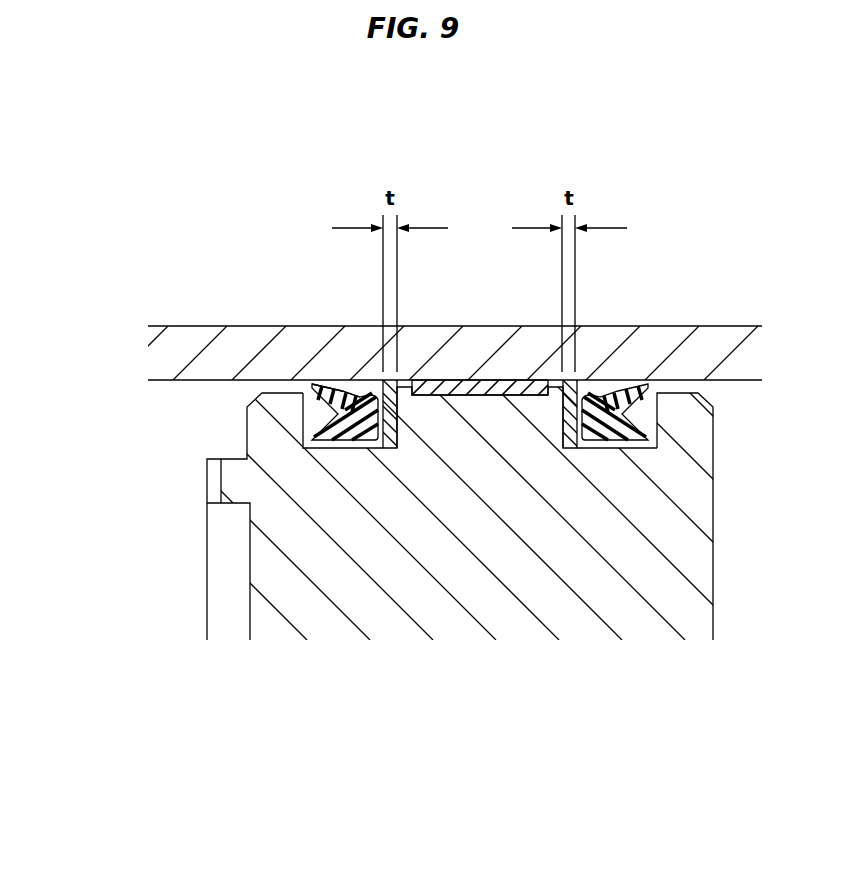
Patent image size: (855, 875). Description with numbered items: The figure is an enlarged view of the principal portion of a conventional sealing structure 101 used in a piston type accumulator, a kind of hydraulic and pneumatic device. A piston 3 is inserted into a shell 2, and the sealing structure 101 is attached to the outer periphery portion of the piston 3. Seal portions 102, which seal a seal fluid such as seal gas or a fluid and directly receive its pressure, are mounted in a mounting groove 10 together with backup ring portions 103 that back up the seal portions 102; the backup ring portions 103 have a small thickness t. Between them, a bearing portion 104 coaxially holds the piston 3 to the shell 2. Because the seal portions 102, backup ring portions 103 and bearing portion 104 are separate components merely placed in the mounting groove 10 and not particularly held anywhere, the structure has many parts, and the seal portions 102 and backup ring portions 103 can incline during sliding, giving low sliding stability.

The shell 2 is at (170, 357).
The piston 3 is at (475, 593).
The mounting groove 10 is at (368, 448).
The sealing structure 101 is at (311, 369).
The seal portion 102 is at (357, 392).
The backup ring portion 103 is at (390, 380).
The bearing portion 104 is at (477, 385).